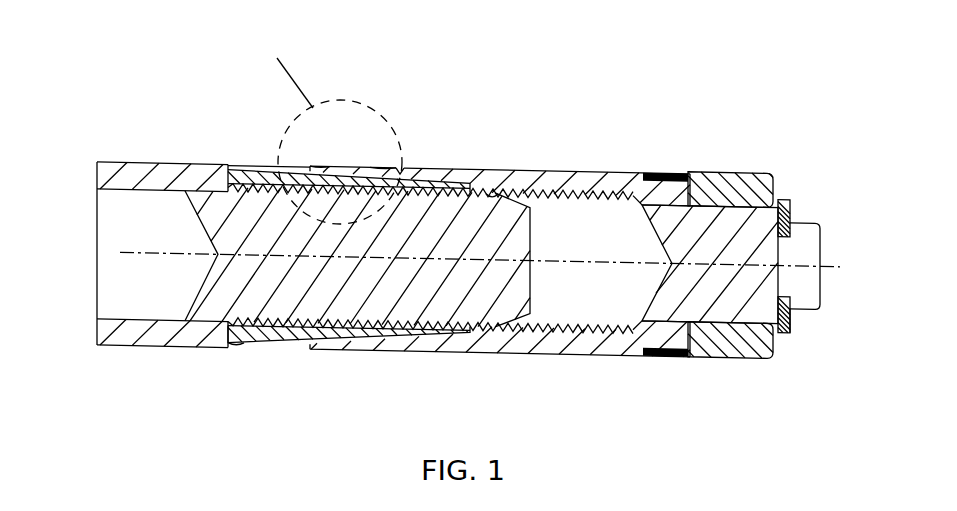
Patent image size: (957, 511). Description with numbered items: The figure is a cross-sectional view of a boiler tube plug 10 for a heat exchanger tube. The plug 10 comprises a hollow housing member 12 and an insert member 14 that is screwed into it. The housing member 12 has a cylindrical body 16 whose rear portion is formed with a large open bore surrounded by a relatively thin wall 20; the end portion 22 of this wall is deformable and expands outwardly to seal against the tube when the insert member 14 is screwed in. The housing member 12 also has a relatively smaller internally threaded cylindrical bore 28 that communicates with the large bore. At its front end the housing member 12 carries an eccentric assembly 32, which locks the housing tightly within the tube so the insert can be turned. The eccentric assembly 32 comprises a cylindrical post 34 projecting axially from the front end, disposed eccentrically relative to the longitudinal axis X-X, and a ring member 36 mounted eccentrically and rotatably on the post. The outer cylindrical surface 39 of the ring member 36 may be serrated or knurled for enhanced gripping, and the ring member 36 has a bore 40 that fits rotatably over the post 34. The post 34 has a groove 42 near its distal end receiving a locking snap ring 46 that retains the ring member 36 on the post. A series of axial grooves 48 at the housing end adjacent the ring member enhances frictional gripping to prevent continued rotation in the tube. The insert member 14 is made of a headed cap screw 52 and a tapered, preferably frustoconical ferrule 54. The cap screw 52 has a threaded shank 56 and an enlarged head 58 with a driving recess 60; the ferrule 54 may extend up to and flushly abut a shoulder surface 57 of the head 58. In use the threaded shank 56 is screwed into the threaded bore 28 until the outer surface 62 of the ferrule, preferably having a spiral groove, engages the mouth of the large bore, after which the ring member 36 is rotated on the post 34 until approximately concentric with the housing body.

The boiler tube plug 10 is at (439, 76).
The housing member 12 is at (500, 288).
The insert member 14 is at (130, 348).
The cylindrical body 16 is at (597, 170).
The thin wall 20 is at (421, 170).
The end portion 22 is at (334, 168).
The internally threaded cylindrical bore 28 is at (566, 290).
The eccentric assembly 32 is at (799, 330).
The cylindrical post 34 is at (821, 252).
The ring member 36 is at (718, 342).
The outer cylindrical surface 39 is at (719, 176).
The bore 40 is at (740, 216).
The groove 42 is at (784, 297).
The locking snap ring 46 is at (787, 202).
The axial grooves 48 is at (666, 176).
The headed cap screw 52 is at (97, 172).
The tapered ferrule 54 is at (257, 168).
The threaded shank 56 is at (490, 196).
The shoulder surface 57 is at (246, 348).
The enlarged head 58 is at (170, 163).
The driving recess 60 is at (140, 286).
The outer surface 62 is at (276, 348).